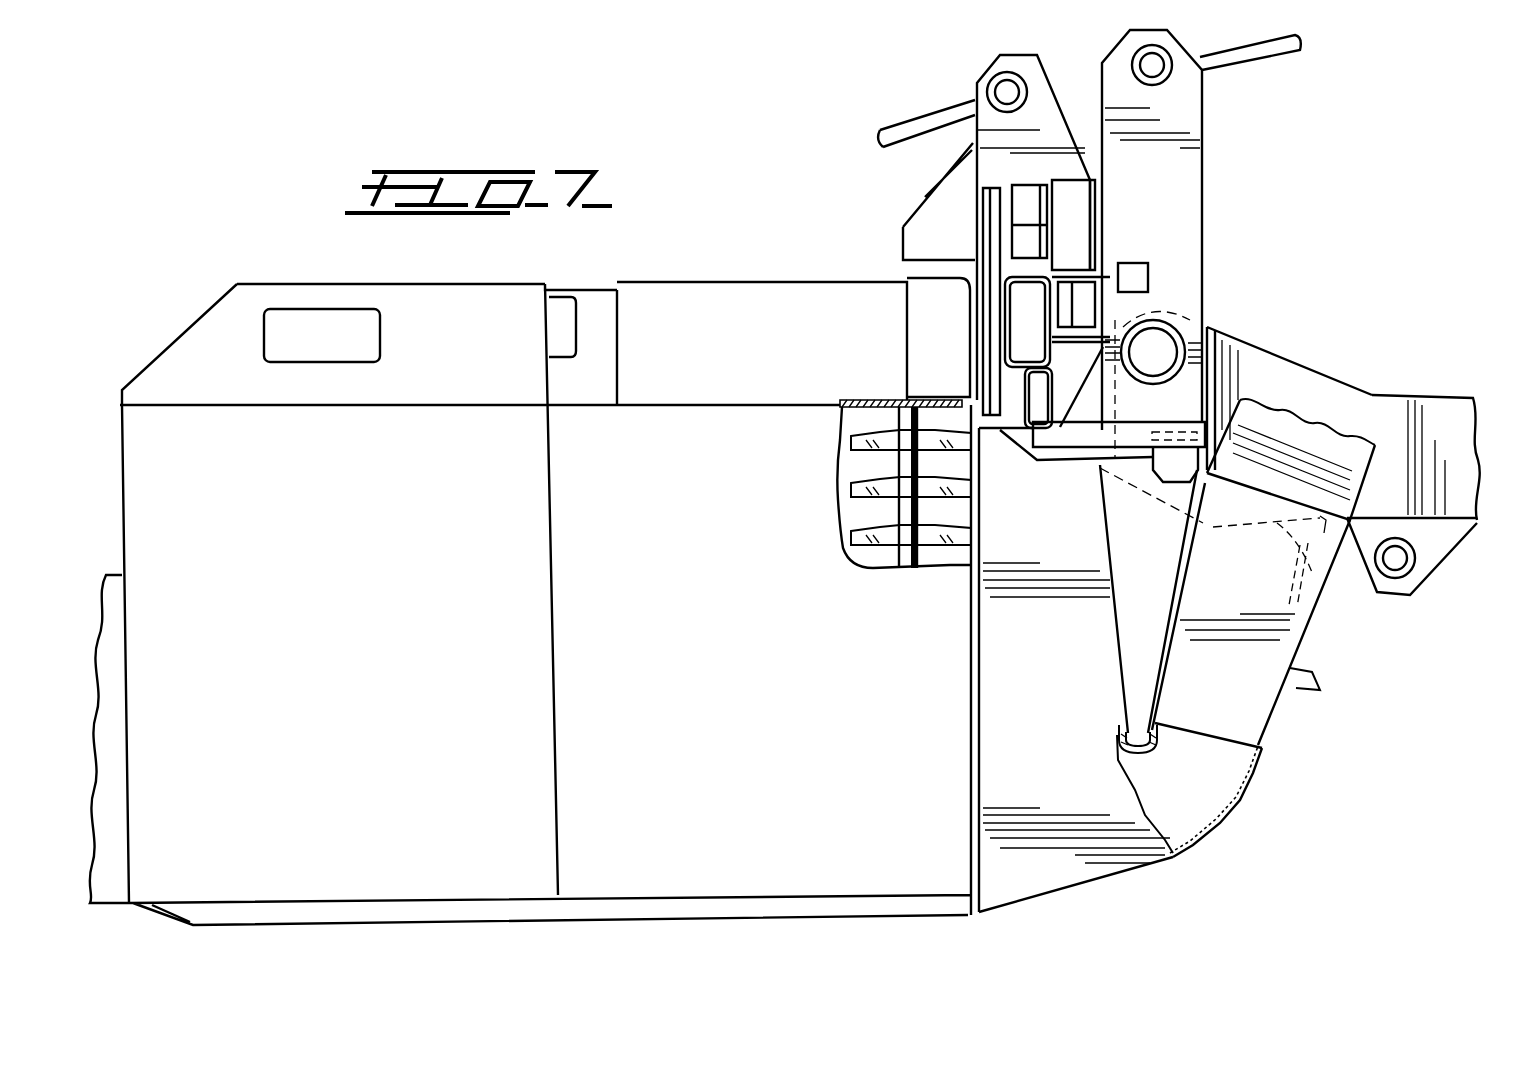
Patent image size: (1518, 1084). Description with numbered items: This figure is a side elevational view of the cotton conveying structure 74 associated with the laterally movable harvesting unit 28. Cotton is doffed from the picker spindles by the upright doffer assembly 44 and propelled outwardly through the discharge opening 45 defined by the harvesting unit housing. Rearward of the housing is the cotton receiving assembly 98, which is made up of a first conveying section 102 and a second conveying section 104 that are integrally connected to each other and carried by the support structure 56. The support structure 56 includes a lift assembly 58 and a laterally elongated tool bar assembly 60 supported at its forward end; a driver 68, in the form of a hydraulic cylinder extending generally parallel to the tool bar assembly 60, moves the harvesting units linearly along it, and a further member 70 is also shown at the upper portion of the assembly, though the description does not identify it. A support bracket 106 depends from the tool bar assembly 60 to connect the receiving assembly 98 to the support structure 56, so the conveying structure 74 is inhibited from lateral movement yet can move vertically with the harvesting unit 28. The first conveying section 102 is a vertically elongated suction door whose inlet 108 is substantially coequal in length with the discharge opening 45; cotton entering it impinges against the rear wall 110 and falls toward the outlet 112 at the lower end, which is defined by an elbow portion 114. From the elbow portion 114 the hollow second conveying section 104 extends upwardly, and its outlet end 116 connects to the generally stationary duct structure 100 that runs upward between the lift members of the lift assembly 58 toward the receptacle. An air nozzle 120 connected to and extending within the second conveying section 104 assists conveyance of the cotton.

The harvesting unit 28 is at (675, 272).
The doffer assembly 44 is at (836, 496).
The discharge opening 45 is at (876, 406).
The support structure 56 is at (958, 348).
The lift assembly 58 is at (1372, 392).
The tool bar assembly 60 is at (1208, 290).
The driver 68 is at (1265, 356).
The link rod 70 is at (1268, 55).
The conveying structure 74 is at (1246, 812).
The cotton receiving assembly 98 is at (1098, 886).
The duct structure 100 is at (1348, 468).
The first conveying section 102 is at (1075, 776).
The second conveying section 104 is at (1266, 594).
The support bracket 106 is at (1162, 579).
The inlet 108 is at (958, 566).
The rear wall 110 is at (1117, 731).
The outlet 112 is at (1170, 784).
The elbow portion 114 is at (1205, 840).
The outlet end 116 is at (1320, 563).
The air nozzle 120 is at (1262, 692).